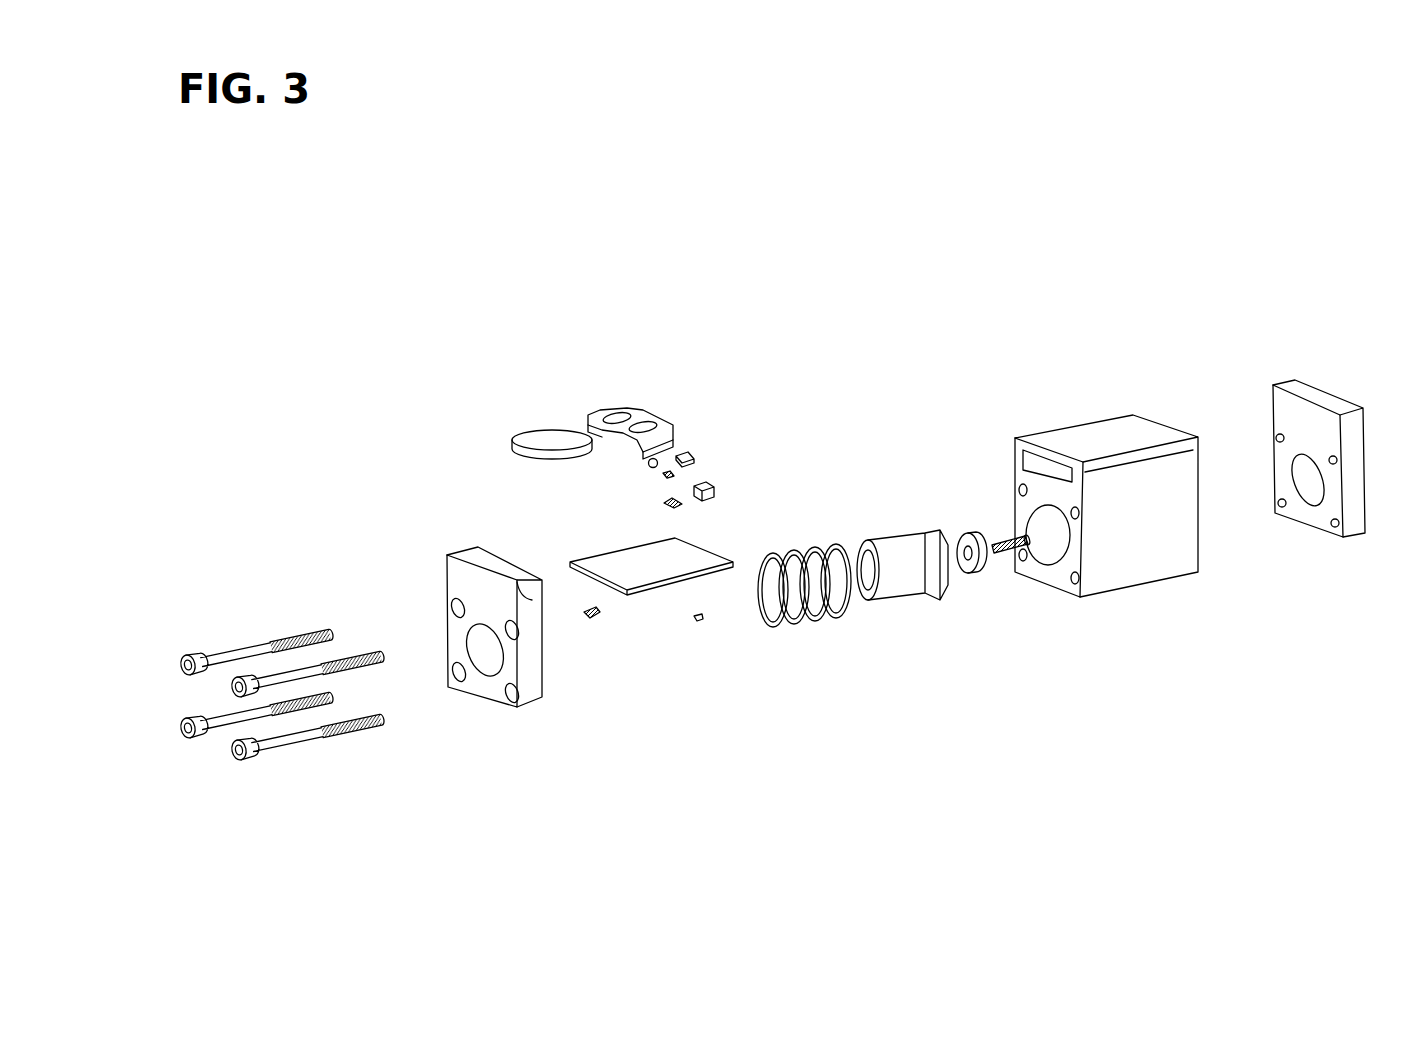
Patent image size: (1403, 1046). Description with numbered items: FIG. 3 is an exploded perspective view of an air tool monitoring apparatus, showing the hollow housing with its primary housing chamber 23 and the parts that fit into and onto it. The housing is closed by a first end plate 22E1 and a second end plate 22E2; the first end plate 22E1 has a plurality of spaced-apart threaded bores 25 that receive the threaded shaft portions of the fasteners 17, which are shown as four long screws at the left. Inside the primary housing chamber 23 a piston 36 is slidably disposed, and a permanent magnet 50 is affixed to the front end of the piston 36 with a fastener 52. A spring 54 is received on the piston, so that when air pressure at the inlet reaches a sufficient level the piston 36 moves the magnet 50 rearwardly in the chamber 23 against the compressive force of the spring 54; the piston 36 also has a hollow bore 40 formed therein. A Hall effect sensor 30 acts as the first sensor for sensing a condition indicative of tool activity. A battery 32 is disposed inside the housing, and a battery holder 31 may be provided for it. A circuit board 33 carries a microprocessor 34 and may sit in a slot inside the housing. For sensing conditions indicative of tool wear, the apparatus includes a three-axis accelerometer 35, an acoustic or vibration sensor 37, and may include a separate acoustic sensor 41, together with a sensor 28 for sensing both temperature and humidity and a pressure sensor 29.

The fasteners 17 is at (284, 752).
The second end plate 22E2 is at (486, 708).
The first end plate 22E1 is at (1317, 545).
The primary housing chamber 23 is at (1058, 550).
The threaded bores 25 is at (1277, 440).
The sensor for sensing both temperature and humidity 28 is at (673, 472).
The pressure sensor 29 is at (716, 486).
The Hall effect sensor 30 is at (698, 621).
The battery holder 31 is at (642, 407).
The battery 32 is at (515, 433).
The circuit board 33 is at (588, 550).
The microprocessor 34 is at (690, 450).
The three-axis accelerometer 35 is at (648, 465).
The piston 36 is at (905, 603).
The acoustic or vibration sensor 37 is at (684, 505).
The hollow bore 40 is at (865, 600).
The separate acoustic sensor 41 is at (590, 618).
The permanent magnet 50 is at (963, 530).
The fastener 52 is at (1005, 535).
The spring 54 is at (787, 626).